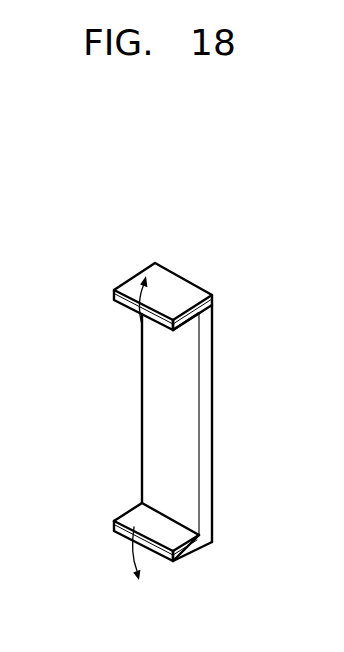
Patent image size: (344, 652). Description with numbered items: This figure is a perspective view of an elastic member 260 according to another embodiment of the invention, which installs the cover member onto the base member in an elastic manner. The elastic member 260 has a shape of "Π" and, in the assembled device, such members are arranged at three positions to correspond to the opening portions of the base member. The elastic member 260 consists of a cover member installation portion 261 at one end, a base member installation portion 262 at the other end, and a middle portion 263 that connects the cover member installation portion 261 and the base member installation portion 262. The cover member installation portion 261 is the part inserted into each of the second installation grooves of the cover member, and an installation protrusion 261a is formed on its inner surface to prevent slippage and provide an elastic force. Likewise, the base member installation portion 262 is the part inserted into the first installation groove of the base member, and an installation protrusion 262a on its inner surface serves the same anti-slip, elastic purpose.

The elastic member 260 is at (98, 264).
The cover member installation portion 261 is at (174, 292).
The installation protrusion 261a is at (186, 322).
The base member installation portion 262 is at (195, 552).
The installation protrusion 262a is at (183, 556).
The middle portion 263 is at (212, 423).